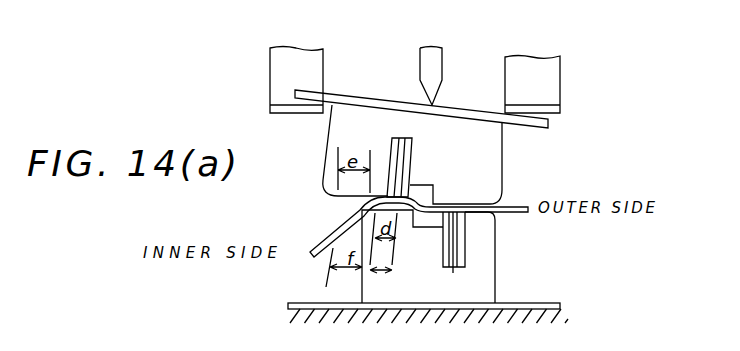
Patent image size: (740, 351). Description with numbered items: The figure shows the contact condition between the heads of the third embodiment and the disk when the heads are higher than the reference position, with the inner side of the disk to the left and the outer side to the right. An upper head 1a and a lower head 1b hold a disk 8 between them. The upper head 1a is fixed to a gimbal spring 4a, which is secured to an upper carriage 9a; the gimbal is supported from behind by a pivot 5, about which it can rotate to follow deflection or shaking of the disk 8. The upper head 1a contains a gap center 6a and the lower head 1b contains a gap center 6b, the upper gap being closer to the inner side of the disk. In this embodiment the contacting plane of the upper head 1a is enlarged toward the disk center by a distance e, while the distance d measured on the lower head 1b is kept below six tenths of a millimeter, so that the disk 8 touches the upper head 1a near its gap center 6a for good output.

The upper carriage 9a is at (295, 57).
The pivot 5 is at (425, 57).
The gimbal spring 4a is at (455, 108).
The upper head 1a is at (480, 160).
The gap center of the upper head 6a is at (413, 155).
The disk 8 is at (515, 207).
The lower head 1b is at (492, 247).
The gap center of the lower head 6b is at (465, 260).